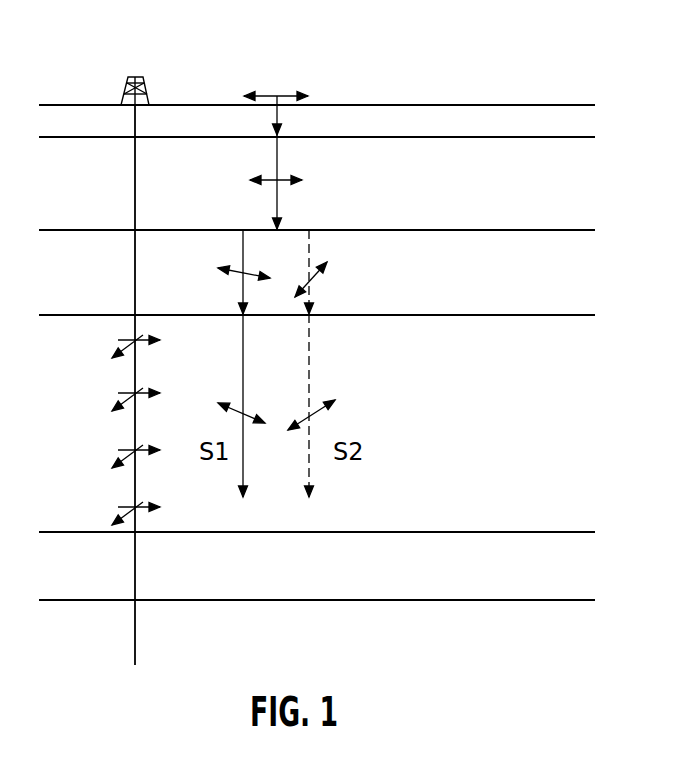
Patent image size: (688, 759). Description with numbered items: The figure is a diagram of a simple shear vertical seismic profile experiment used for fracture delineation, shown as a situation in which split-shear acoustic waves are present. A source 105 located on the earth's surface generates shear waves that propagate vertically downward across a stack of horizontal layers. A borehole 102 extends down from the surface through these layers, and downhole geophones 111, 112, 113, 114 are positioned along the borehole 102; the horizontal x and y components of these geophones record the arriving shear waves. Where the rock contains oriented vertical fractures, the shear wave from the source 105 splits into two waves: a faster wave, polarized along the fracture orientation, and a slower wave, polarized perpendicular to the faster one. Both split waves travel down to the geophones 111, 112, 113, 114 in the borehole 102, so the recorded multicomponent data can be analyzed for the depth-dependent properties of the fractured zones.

The borehole 102 is at (135, 197).
The source 105 is at (279, 96).
The downhole geophone 111 is at (120, 340).
The downhole geophone 112 is at (120, 393).
The downhole geophone 113 is at (120, 450).
The downhole geophone 114 is at (120, 507).